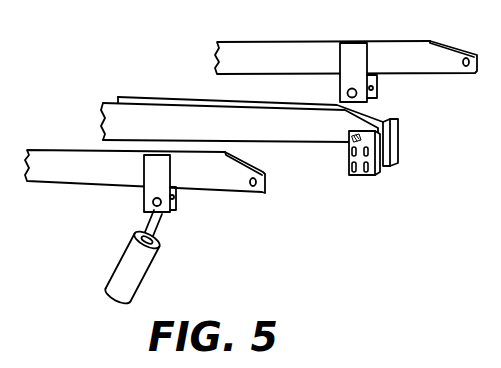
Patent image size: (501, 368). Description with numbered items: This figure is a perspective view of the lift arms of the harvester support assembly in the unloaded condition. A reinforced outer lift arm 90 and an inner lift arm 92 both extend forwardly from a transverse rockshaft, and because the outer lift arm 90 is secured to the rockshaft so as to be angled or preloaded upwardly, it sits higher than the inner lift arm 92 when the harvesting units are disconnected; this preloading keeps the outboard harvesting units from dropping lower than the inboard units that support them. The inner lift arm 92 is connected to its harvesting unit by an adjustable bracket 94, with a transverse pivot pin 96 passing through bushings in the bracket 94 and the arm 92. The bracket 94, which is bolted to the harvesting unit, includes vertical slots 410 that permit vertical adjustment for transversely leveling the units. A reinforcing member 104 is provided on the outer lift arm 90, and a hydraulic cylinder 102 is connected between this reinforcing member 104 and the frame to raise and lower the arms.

The outer lift arm 90 is at (455, 53).
The inner lift arm 92 is at (204, 103).
The adjustable bracket 94 is at (378, 172).
The transverse pivot pin 96 is at (350, 140).
The hydraulic cylinder 102 is at (166, 229).
The reinforcing member 104 is at (354, 50).
The vertical slot 410 is at (365, 176).